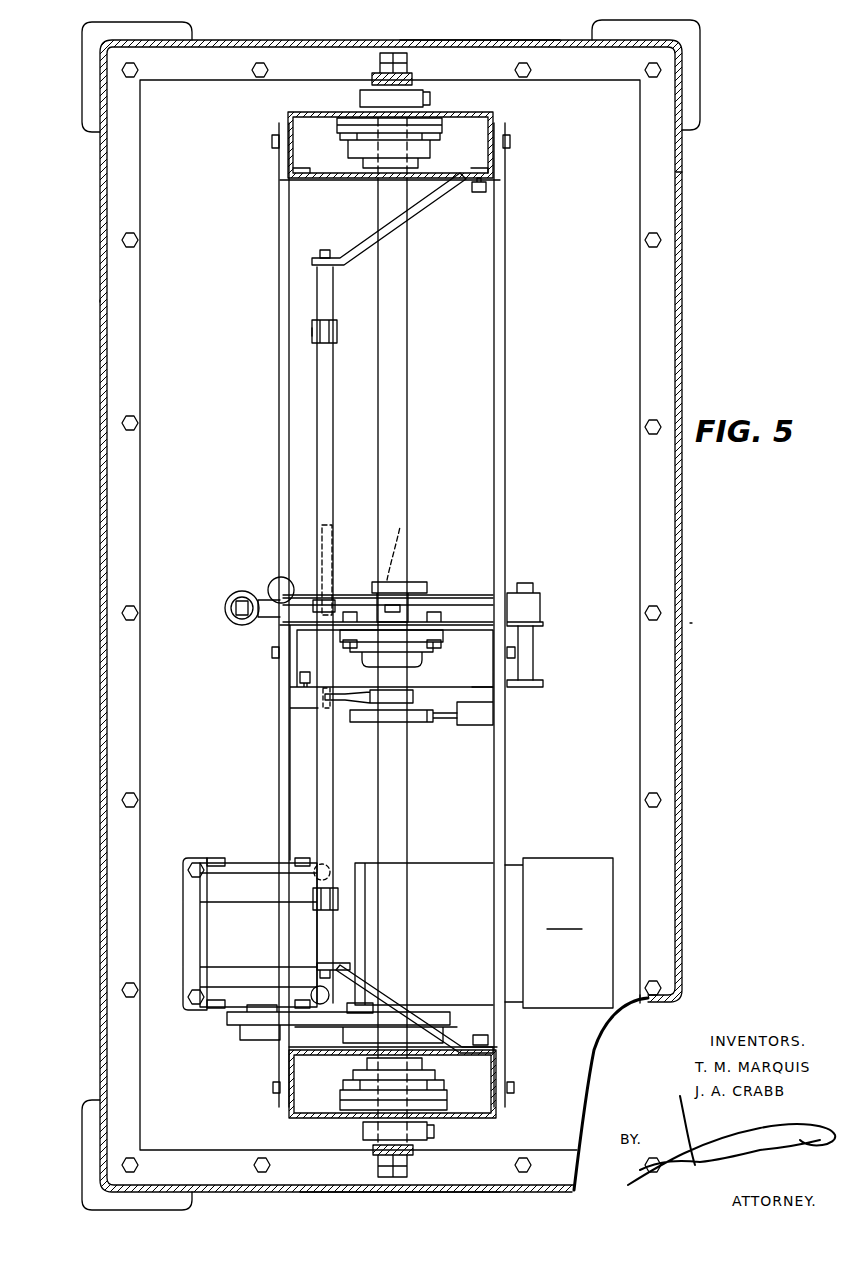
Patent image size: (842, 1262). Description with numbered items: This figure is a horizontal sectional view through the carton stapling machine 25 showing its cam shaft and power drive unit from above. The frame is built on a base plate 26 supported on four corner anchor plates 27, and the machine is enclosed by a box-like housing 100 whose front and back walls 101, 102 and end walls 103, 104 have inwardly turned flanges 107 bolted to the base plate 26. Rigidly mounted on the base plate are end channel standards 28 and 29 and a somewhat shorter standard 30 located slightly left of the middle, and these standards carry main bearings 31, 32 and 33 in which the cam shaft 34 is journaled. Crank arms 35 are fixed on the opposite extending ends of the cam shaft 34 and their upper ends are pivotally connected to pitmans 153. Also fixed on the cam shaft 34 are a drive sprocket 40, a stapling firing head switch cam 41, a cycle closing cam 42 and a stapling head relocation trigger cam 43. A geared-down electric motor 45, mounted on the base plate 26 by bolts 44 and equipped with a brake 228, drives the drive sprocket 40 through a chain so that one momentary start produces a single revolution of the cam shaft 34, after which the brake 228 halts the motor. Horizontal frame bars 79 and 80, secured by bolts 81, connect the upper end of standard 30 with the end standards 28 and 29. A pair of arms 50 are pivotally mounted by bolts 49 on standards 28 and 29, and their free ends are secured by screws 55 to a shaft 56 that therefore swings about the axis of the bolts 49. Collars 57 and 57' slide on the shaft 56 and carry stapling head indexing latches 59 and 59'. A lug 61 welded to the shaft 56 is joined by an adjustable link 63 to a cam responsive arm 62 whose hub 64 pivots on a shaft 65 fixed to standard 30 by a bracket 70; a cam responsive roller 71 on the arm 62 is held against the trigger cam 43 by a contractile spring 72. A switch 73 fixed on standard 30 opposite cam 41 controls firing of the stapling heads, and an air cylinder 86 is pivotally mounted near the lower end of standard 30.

The carton stapling machine 25 is at (710, 628).
The base plate 26 is at (623, 592).
The corner anchor plates 27 is at (100, 1110).
The end channel standard 28 is at (496, 1072).
The end channel standard 29 is at (490, 114).
The short standard 30 is at (468, 622).
The main bearing 31 is at (340, 1098).
The main bearing 32 is at (425, 655).
The main bearing 33 is at (432, 152).
The cam shaft 34 is at (398, 815).
The crank arms 35 is at (362, 1130).
The drive sprocket 40 is at (420, 1030).
The stapling firing head switch cam 41 is at (360, 723).
The cycle closing cam 42 is at (413, 700).
The stapling head relocation trigger cam 43 is at (416, 585).
The bolts 44 is at (318, 995).
The geared-down electric motor 45 is at (183, 925).
The bolts 49 is at (488, 1040).
The arms 50 is at (400, 1004).
The screws 55 is at (322, 970).
The shaft 56 is at (330, 785).
The collar 57 is at (293, 905).
The collar 57' is at (337, 346).
The stapling head indexing latch 59 is at (337, 854).
The stapling head indexing latch 59' is at (278, 329).
The lug 61 is at (330, 575).
The cam responsive arm 62 is at (447, 598).
The adjustable link 63 is at (332, 608).
The hub 64 is at (537, 610).
The shaft 65 is at (526, 642).
The bracket 70 is at (543, 685).
The cam responsive roller 71 is at (400, 527).
The contractile spring 72 is at (275, 580).
The switch 73 is at (487, 714).
The horizontal frame bar 79 is at (505, 763).
The horizontal frame bar 80 is at (288, 735).
The bolts 81 is at (514, 1088).
The air cylinder 86 is at (235, 600).
The housing 100 is at (700, 176).
The front wall 101 is at (683, 247).
The back wall 102 is at (100, 300).
The end wall 103 is at (410, 1192).
The end wall 104 is at (492, 42).
The flanges 107 is at (162, 1165).
The pitmans 153 is at (378, 1150).
The brake 228 is at (559, 933).